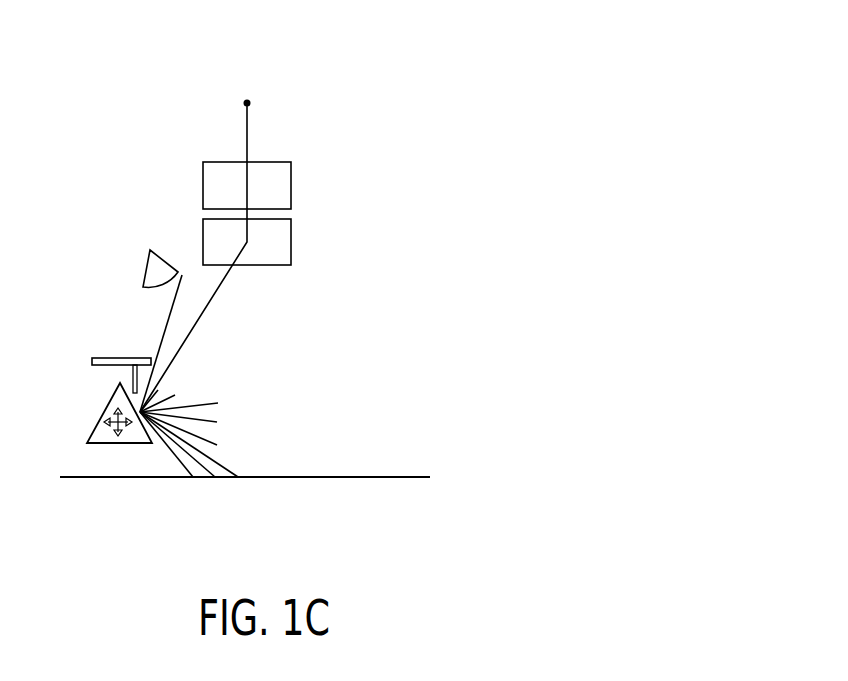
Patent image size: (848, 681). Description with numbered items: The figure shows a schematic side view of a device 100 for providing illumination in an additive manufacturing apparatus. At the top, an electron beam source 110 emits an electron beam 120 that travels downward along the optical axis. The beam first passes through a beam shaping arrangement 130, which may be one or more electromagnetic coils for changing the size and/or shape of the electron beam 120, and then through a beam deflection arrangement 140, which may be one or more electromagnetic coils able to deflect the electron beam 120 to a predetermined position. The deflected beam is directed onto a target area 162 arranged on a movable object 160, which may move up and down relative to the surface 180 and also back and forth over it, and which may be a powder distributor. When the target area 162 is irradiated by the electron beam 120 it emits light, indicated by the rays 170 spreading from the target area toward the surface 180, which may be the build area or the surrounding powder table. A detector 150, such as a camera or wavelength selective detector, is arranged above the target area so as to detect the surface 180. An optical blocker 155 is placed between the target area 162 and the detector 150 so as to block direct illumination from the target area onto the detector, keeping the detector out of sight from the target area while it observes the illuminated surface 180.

The device 100 is at (404, 96).
The electron beam source 110 is at (250, 102).
The electron beam 120 is at (260, 134).
The beam shaping arrangement 130 is at (281, 186).
The beam deflection arrangement 140 is at (282, 238).
The detector 150 is at (148, 263).
The optical blocker 155 is at (91, 341).
The movable object 160 is at (88, 424).
The target area 162 is at (115, 388).
The scattered light rays 170 is at (207, 395).
The surface 180 is at (166, 484).